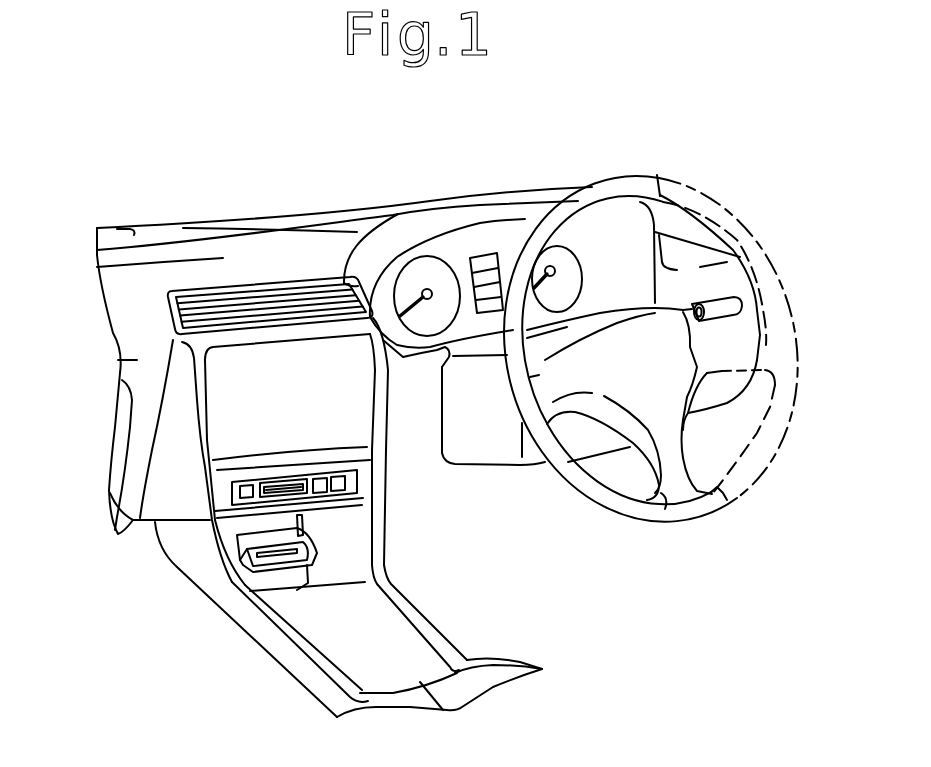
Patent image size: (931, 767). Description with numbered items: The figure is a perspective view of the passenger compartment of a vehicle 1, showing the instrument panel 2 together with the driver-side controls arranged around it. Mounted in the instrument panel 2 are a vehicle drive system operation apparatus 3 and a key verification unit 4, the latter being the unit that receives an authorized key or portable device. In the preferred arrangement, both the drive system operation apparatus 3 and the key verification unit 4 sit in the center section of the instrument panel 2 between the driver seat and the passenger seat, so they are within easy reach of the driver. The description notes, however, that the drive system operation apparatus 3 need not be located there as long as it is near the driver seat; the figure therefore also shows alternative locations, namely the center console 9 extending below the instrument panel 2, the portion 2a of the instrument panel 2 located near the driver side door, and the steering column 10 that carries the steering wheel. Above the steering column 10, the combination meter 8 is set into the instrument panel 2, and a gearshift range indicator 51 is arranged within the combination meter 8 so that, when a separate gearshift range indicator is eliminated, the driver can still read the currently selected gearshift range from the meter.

The vehicle 1 is at (757, 210).
The instrument panel 2 is at (357, 403).
The portion of the instrument panel 2a is at (750, 307).
The vehicle drive system operation apparatus 3 is at (362, 483).
The key verification unit 4 is at (291, 600).
The combination meter 8 is at (443, 252).
The center console 9 is at (413, 651).
The steering column 10 is at (483, 457).
The gearshift range indicator 51 is at (487, 257).